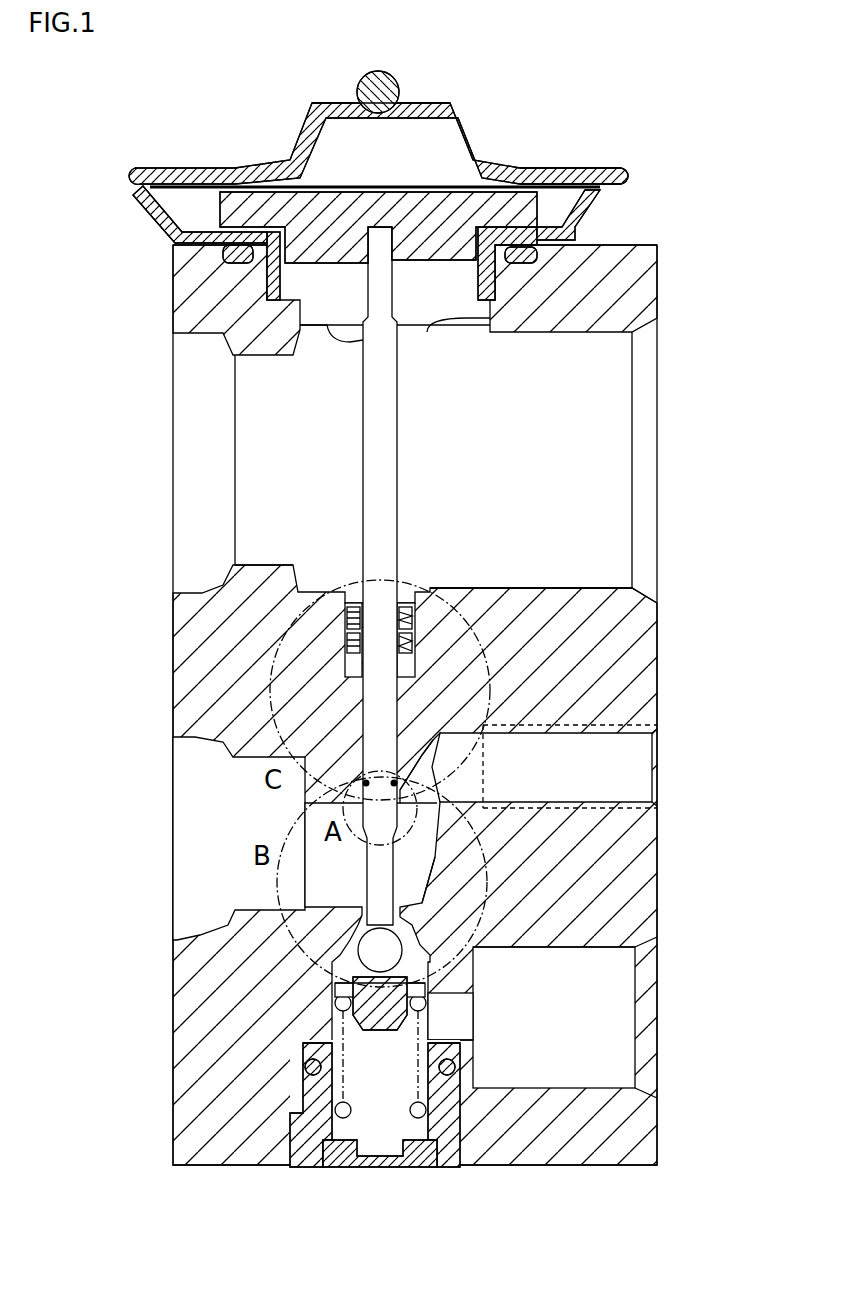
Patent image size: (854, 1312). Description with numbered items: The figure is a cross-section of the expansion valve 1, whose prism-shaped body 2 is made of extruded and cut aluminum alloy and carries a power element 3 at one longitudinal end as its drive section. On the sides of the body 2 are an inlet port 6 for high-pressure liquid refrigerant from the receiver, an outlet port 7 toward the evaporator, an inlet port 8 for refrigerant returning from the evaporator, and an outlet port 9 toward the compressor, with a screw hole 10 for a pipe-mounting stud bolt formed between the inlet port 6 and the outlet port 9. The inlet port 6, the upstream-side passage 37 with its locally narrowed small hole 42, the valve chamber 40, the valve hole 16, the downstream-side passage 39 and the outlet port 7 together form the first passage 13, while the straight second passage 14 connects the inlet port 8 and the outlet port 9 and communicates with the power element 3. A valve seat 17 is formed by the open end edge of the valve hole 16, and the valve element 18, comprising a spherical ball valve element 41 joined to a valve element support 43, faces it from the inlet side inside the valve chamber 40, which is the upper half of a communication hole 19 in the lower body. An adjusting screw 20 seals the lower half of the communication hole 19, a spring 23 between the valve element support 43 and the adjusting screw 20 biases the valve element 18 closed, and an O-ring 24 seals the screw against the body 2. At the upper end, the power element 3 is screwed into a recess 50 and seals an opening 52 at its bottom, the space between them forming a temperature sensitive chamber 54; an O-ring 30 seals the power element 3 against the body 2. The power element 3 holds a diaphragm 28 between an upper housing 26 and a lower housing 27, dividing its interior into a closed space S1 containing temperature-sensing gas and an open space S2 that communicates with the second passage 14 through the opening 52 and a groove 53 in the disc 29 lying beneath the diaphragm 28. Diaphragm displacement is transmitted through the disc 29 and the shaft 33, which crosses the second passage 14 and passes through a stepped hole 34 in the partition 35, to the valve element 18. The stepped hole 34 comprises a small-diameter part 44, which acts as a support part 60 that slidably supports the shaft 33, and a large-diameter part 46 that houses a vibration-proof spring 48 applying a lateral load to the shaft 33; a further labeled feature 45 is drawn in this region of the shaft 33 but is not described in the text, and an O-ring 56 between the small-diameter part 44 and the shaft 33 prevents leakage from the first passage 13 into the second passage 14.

The expansion valve 1 is at (562, 159).
The body 2 is at (610, 245).
The power element 3 is at (480, 157).
The inlet port 6 is at (647, 1000).
The outlet port 7 is at (203, 790).
The inlet port 8 is at (193, 438).
The outlet port 9 is at (645, 388).
The screw hole 10 is at (633, 725).
The first passage 13 is at (607, 965).
The second passage 14 is at (588, 437).
The valve hole 16 is at (362, 877).
The valve seat 17 is at (415, 940).
The valve element 18 is at (120, 875).
The communication hole 19 is at (300, 1050).
The adjusting screw 20 is at (485, 1137).
The spring 23 is at (340, 1085).
The O-ring 24 is at (305, 1068).
The upper housing 26 is at (213, 167).
The lower housing 27 is at (193, 203).
The diaphragm 28 is at (557, 185).
The disc 29 is at (230, 220).
The O-ring 30 is at (222, 250).
The shaft 33 is at (400, 535).
The stepped hole 34 is at (113, 642).
The partition 35 is at (457, 585).
The upstream-side passage 37 is at (573, 1005).
The downstream-side passage 39 is at (270, 838).
The valve chamber 40 is at (330, 1043).
The ball valve element 41 is at (357, 975).
The small hole 42 is at (458, 1022).
The valve element support 43 is at (345, 1010).
The small-diameter part 44 is at (350, 680).
The guide hole 45 is at (405, 656).
The large-diameter part 46 is at (347, 633).
The vibration-proof spring 48 is at (345, 608).
The recess 50 is at (515, 262).
The opening 52 is at (440, 322).
The groove 53 is at (527, 237).
The temperature sensitive chamber 54 is at (323, 285).
The O-ring 56 is at (403, 786).
The support part 60 is at (363, 740).
The closed space S1 is at (313, 160).
The open space S2 is at (203, 200).